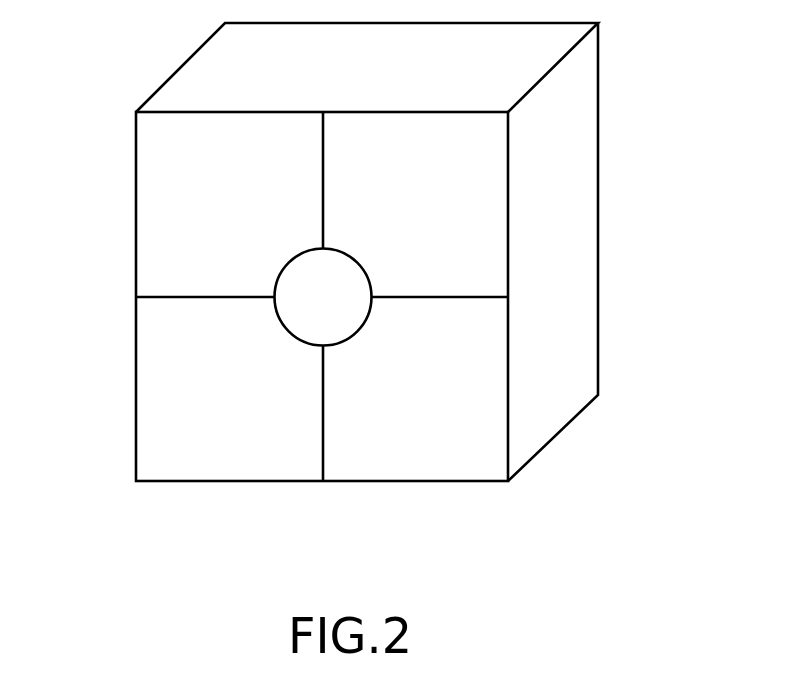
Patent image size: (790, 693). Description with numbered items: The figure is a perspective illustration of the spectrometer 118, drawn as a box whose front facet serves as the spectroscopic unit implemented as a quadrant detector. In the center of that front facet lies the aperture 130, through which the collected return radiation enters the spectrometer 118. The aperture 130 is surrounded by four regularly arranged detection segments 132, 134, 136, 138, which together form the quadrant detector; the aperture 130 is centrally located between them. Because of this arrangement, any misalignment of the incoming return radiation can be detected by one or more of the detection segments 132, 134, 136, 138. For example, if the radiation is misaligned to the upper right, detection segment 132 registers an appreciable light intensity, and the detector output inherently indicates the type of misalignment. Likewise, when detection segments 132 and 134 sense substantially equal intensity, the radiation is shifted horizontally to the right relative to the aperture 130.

The spectrometer 118 is at (585, 325).
The aperture 130 is at (340, 272).
The detection segment 132 is at (432, 137).
The detection segment 134 is at (425, 460).
The detection segment 136 is at (229, 460).
The detection segment 138 is at (152, 232).